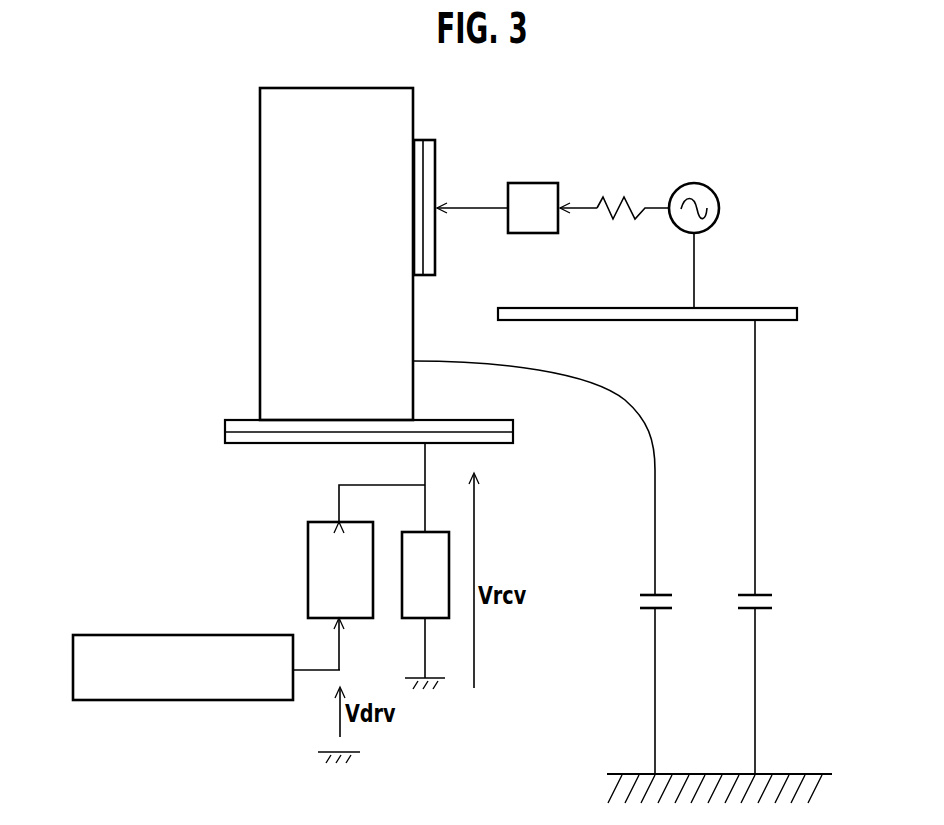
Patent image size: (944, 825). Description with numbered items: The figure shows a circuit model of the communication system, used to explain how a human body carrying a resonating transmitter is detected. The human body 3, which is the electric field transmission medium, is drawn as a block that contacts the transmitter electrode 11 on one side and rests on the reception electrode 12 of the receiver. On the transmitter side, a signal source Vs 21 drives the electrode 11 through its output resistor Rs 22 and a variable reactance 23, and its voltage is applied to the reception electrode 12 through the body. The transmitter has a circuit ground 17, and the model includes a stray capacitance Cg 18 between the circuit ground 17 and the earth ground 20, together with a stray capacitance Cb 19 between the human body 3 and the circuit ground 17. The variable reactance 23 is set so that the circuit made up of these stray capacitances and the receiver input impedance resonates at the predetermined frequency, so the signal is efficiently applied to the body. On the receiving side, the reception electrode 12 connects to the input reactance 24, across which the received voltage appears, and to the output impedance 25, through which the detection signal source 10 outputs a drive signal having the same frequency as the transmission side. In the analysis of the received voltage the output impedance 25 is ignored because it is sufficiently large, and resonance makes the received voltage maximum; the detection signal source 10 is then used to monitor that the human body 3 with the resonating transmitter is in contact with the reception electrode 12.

The human body 3 is at (260, 100).
The electrode 11 is at (425, 138).
The reception electrode 12 is at (515, 431).
The reactance Xv 23 is at (530, 183).
The output resistor Rs 22 is at (603, 248).
The signal source Vs 21 is at (697, 183).
The circuit ground 17 is at (723, 307).
The stray capacitance Cg 18 is at (765, 597).
The stray capacitance Cb 19 is at (665, 597).
The earth ground 20 is at (797, 773).
The input reactance Xin 24 is at (434, 531).
The Zdrv 25 is at (308, 569).
The detection signal source 10 is at (215, 701).